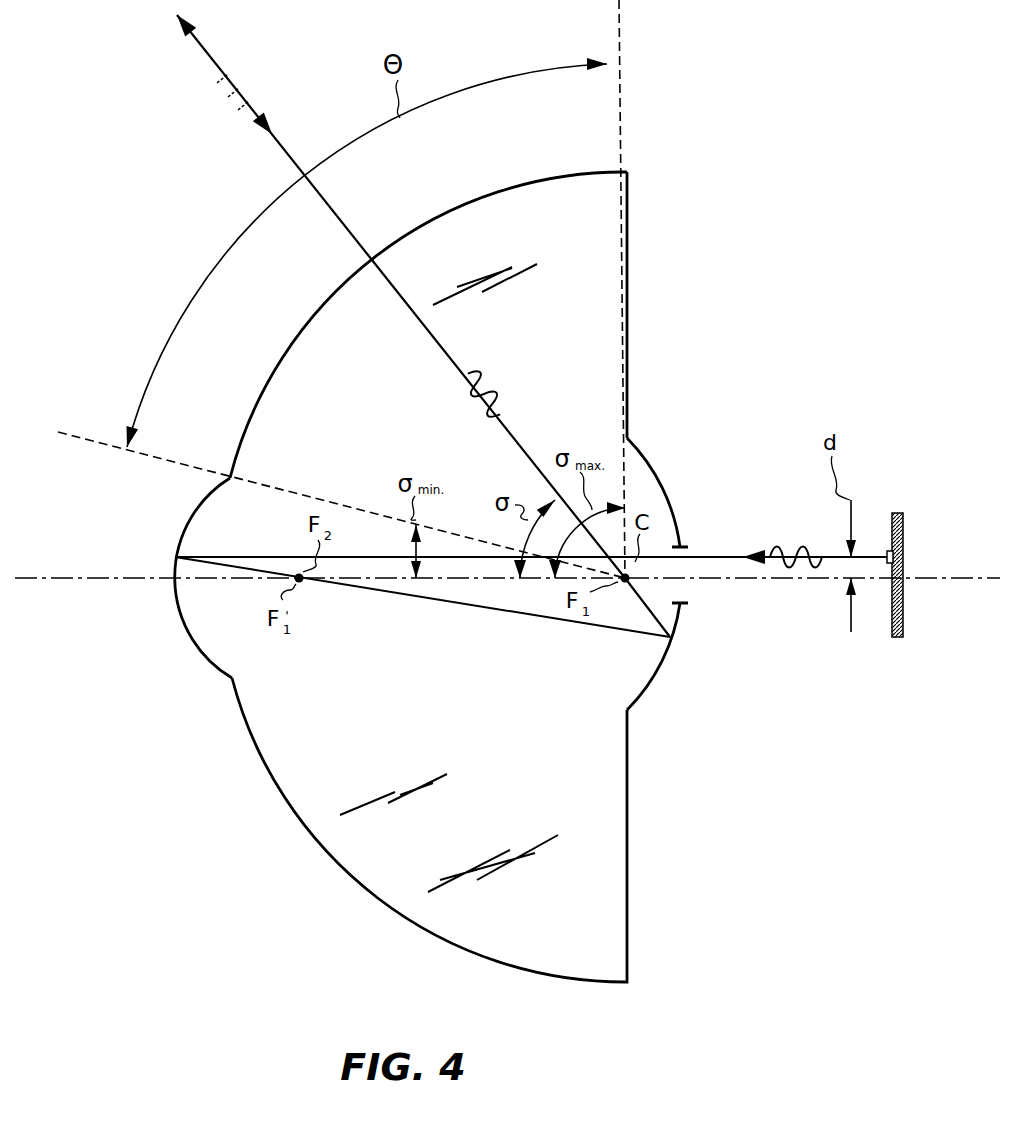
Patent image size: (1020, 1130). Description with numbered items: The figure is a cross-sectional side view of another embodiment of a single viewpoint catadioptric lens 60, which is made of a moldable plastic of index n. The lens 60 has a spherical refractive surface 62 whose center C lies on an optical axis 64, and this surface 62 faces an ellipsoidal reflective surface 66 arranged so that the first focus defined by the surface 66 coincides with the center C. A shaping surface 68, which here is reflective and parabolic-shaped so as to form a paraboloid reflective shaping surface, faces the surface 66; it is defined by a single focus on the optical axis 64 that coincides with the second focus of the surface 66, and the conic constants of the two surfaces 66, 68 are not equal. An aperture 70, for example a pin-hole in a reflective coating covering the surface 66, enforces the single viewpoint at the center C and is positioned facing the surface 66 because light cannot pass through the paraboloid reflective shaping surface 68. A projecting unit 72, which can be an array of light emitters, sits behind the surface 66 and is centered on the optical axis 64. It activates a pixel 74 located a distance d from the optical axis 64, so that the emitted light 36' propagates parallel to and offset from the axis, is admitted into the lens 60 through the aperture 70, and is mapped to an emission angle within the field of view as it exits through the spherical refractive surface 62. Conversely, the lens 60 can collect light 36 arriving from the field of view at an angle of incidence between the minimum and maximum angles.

The light 36 is at (274, 137).
The light 36' is at (531, 448).
The single viewpoint catadioptric lens 60 is at (120, 218).
The spherical refractive surface 62 is at (480, 195).
The optical axis 64 is at (65, 577).
The ellipsoidal reflective surface 66 is at (660, 472).
The shaping surface 68 is at (177, 607).
The aperture 70 is at (683, 606).
The projecting unit 72 is at (895, 640).
The pixel 74 is at (890, 550).